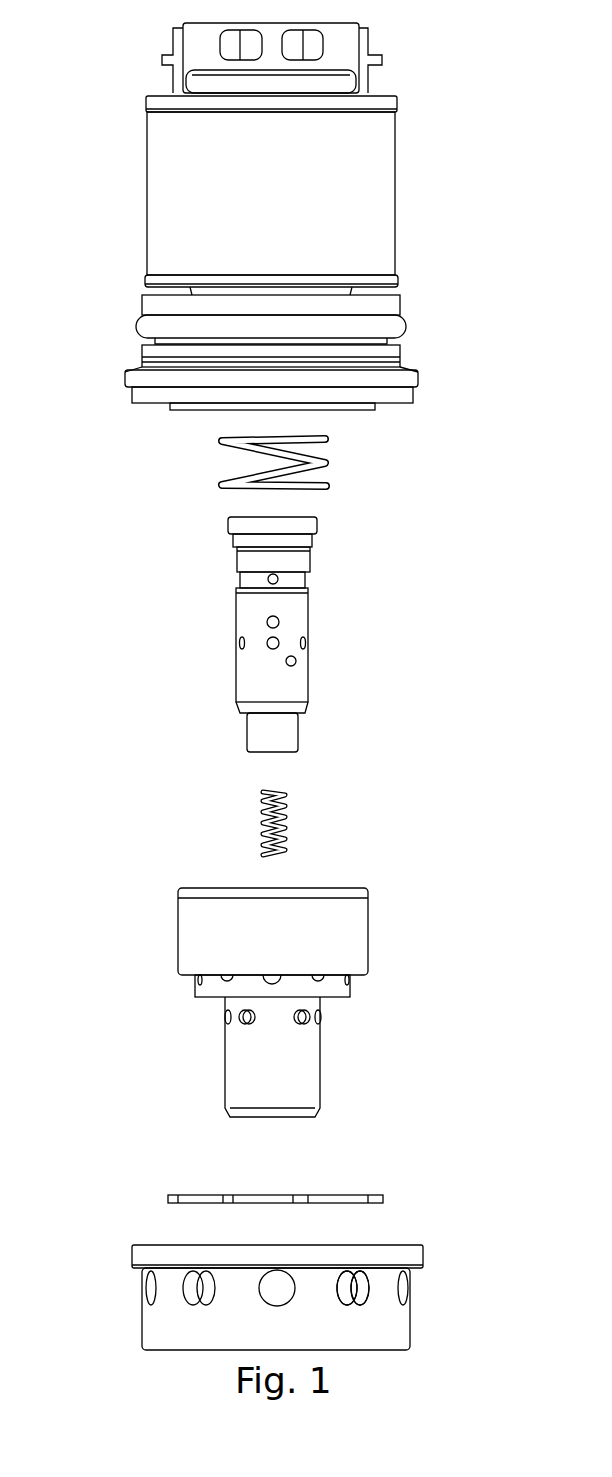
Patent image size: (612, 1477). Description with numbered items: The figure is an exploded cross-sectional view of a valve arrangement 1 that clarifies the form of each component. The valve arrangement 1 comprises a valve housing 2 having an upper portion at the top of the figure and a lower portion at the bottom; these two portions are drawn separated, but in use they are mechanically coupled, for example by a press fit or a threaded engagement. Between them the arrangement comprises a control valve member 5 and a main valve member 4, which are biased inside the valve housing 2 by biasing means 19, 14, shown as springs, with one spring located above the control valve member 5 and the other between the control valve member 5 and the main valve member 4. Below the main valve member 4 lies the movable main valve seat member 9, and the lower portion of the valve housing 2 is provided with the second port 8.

The valve arrangement 1 is at (108, 106).
The valve housing 2 is at (230, 211).
The biasing means 19 is at (223, 438).
The control valve member 5 is at (252, 665).
The biasing means 14 is at (268, 832).
The main valve member 4 is at (202, 960).
The movable main valve seat member 9 is at (218, 1193).
The second port 8 is at (356, 1283).